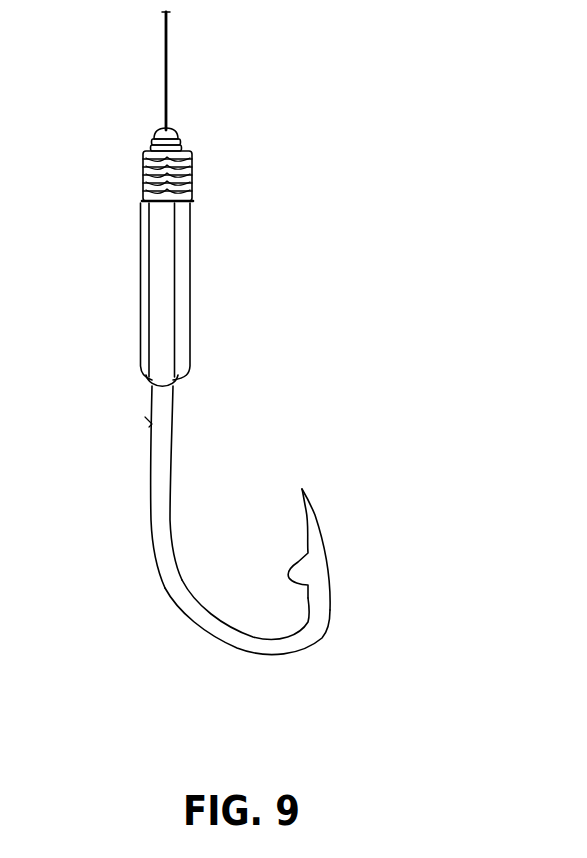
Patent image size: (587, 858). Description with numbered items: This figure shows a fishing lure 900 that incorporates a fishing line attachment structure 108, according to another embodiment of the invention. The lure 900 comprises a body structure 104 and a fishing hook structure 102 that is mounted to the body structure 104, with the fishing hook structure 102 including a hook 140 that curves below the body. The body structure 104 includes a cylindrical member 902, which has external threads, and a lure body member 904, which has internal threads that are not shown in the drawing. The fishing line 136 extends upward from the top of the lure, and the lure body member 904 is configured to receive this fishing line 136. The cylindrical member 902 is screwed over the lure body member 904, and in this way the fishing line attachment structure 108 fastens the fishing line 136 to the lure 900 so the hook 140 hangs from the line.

The fishing lure 900 is at (262, 213).
The fishing line 136 is at (168, 62).
The fishing line attachment structure 108 is at (136, 135).
The cylindrical member 902 is at (181, 140).
The lure body member 904 is at (142, 187).
The body structure 104 is at (208, 274).
The fishing hook structure 102 is at (347, 549).
The hook 140 is at (280, 658).